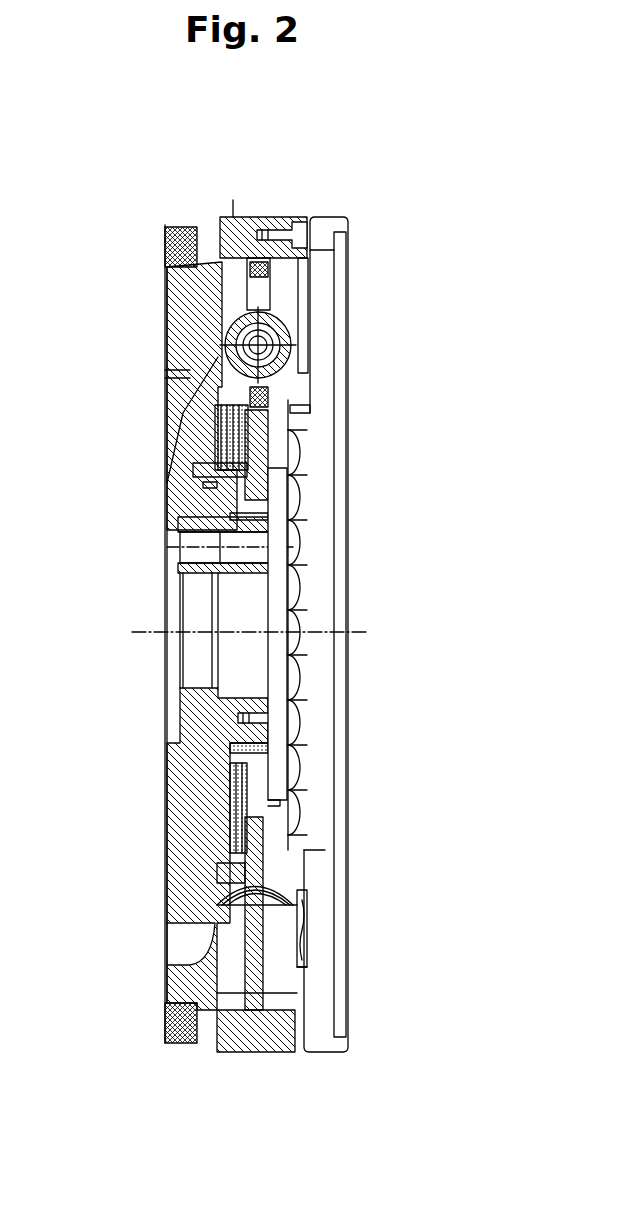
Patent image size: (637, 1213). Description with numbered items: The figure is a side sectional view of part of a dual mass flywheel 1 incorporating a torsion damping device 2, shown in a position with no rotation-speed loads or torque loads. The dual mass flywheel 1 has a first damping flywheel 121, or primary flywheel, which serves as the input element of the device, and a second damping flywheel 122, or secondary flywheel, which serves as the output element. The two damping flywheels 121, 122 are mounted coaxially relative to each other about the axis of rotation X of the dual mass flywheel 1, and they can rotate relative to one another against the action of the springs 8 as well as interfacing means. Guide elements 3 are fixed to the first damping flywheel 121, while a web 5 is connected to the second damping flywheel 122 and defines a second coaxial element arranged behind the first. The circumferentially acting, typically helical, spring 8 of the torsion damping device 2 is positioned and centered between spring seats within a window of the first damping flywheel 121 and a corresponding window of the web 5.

The dual mass flywheel 1 is at (256, 626).
The torsion damping device 2 is at (273, 300).
The guide elements 3 is at (223, 933).
The web 5 is at (258, 1000).
The spring 8 is at (280, 369).
The first damping flywheel 121 is at (187, 843).
The second damping flywheel 122 is at (323, 952).
The axis of rotation X is at (358, 632).